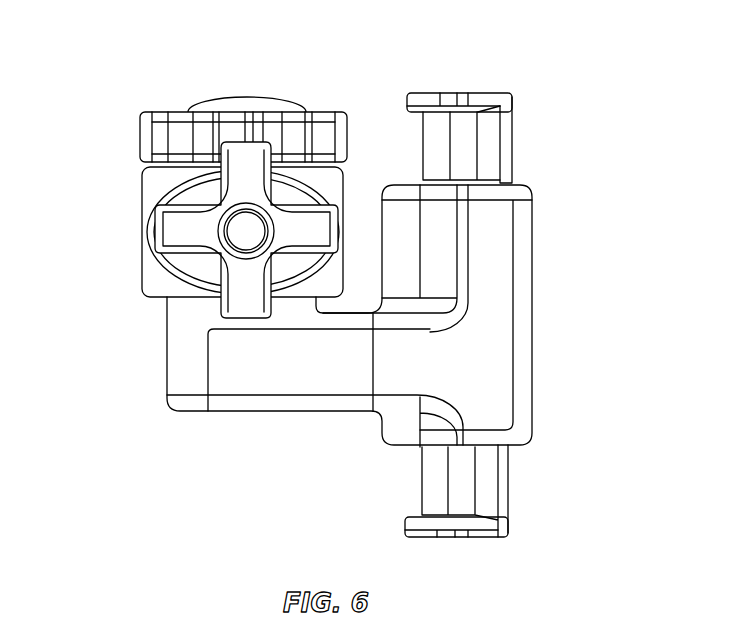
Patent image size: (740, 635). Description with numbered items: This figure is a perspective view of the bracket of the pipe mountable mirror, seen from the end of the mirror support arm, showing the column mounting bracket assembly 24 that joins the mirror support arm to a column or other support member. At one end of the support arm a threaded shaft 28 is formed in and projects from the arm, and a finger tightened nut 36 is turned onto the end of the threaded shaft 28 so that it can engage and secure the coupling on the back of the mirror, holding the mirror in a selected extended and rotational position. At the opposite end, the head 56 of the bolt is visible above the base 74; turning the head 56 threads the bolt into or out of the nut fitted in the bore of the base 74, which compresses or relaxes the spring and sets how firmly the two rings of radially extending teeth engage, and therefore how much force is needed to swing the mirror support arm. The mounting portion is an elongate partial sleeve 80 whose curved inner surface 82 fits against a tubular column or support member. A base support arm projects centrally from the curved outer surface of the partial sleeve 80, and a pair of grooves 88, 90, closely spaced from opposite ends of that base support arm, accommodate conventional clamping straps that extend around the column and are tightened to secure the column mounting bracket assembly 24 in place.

The column mounting bracket assembly 24 is at (100, 105).
The head of bolt 56 is at (181, 112).
The base 74 is at (142, 190).
The threaded shaft 28 is at (230, 236).
The finger tightened nut 36 is at (222, 263).
The elongate partial sleeve 80 is at (565, 217).
The curved inner surface 82 is at (532, 272).
The groove 88 is at (490, 149).
The groove 90 is at (482, 485).